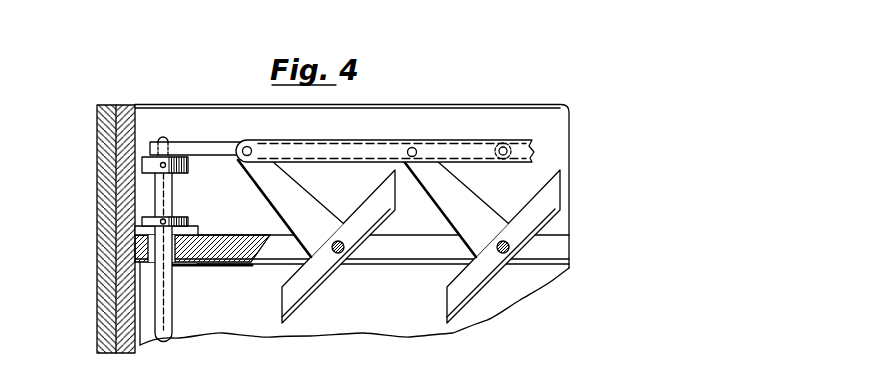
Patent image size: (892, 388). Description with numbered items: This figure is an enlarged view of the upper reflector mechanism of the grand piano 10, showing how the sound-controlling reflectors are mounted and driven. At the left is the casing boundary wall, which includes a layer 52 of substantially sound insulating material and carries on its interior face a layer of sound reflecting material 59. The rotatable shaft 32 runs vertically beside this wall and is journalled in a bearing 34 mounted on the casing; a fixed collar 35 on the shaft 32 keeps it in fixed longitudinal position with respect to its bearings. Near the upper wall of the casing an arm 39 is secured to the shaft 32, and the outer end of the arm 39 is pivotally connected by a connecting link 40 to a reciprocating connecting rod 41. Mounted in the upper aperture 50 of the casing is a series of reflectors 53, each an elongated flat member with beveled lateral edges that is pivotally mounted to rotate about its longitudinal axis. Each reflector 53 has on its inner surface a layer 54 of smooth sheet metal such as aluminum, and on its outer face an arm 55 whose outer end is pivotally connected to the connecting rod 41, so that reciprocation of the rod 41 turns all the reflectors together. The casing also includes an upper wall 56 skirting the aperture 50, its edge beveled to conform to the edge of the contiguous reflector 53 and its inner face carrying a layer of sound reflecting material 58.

The grand piano 10 is at (364, 335).
The rotatable shaft 32 is at (172, 315).
The bearing 34 is at (135, 229).
The fixed collar 35 is at (142, 221).
The arm 39 is at (141, 163).
The connecting link 40 is at (198, 148).
The reciprocating connecting rod 41 is at (509, 146).
The upper aperture 50 is at (412, 252).
The layer of sound insulating material 52 is at (115, 353).
The reflector 53 is at (368, 203).
The layer of sound reflecting material 54 is at (314, 289).
The arm 55 is at (264, 184).
The upper wall 56 is at (247, 240).
The layer of sound reflecting material 58 is at (214, 266).
The layer of sound reflecting material 59 is at (140, 349).